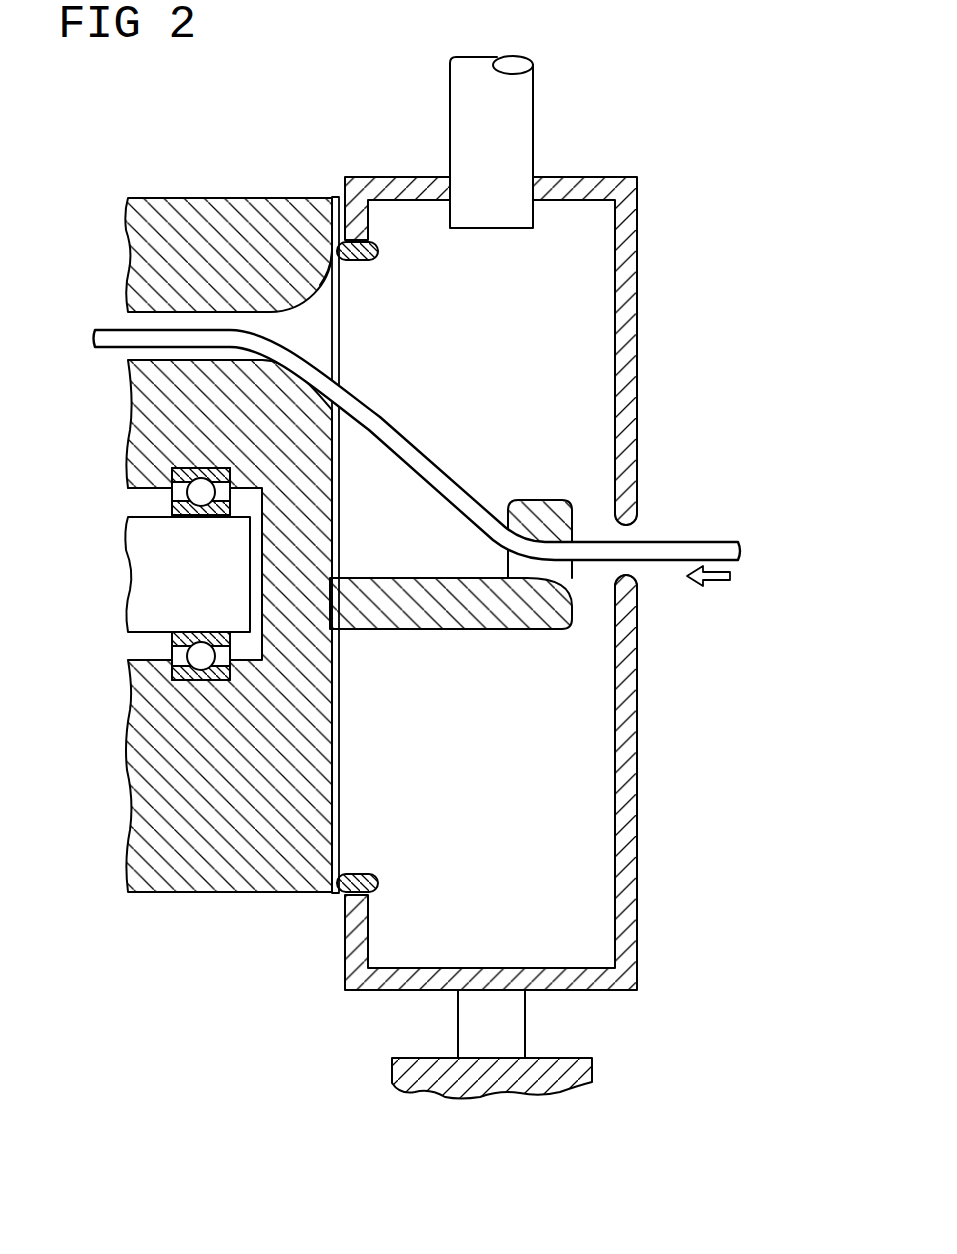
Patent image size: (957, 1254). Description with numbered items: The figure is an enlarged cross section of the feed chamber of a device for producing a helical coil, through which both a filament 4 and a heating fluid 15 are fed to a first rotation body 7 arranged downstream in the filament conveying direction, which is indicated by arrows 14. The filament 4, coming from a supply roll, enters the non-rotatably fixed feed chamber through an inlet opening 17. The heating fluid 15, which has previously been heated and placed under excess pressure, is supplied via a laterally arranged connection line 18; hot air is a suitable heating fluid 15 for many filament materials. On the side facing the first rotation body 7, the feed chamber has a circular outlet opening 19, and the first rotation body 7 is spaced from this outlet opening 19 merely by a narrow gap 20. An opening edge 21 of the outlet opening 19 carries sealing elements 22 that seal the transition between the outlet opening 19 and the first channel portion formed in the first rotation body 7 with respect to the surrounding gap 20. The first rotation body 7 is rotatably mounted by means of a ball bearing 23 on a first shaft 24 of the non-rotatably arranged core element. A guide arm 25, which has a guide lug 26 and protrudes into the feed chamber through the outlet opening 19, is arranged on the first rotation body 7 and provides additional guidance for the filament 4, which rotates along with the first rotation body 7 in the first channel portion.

The filament 4 is at (105, 337).
The first rotation body 7 is at (131, 222).
The arrows 14 is at (712, 582).
The heating fluid 15 is at (515, 318).
The inlet opening 17 is at (638, 530).
The connection line 18 is at (517, 113).
The outlet opening 19 is at (360, 288).
The gap 20 is at (334, 192).
The opening edge 21 is at (366, 241).
The sealing elements 22 is at (338, 251).
The ball bearing 23 is at (172, 472).
The first shaft 24 is at (143, 575).
The guide arm 25 is at (488, 622).
The guide lug 26 is at (566, 582).